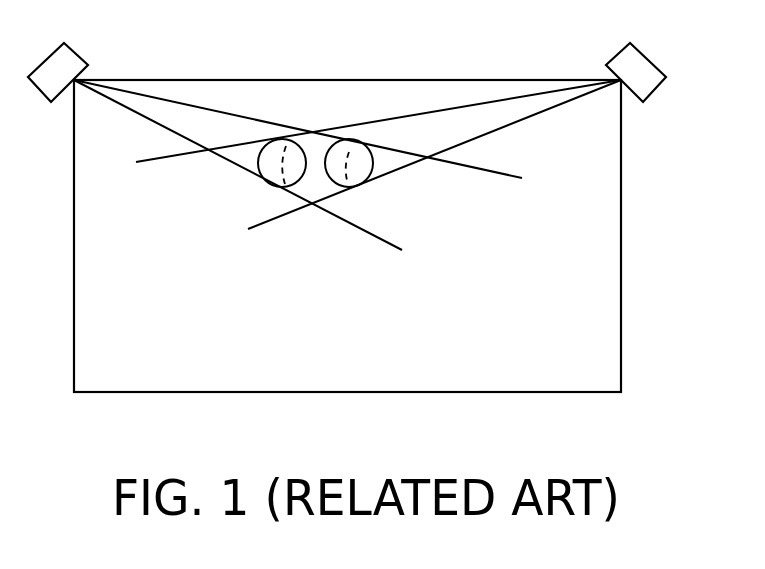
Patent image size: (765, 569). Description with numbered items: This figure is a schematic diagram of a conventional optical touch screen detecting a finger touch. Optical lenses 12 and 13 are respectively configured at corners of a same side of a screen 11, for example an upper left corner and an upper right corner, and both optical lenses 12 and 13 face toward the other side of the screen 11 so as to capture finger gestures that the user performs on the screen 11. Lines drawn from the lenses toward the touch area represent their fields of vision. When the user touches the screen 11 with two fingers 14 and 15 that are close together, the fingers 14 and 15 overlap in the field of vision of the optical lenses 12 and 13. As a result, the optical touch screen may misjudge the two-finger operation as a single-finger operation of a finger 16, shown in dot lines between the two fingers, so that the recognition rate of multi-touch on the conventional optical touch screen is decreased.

The screen 11 is at (621, 246).
The optical lens 12 is at (72, 43).
The optical lens 13 is at (633, 43).
The finger 14 is at (263, 140).
The finger 15 is at (377, 147).
The finger 16 is at (335, 140).